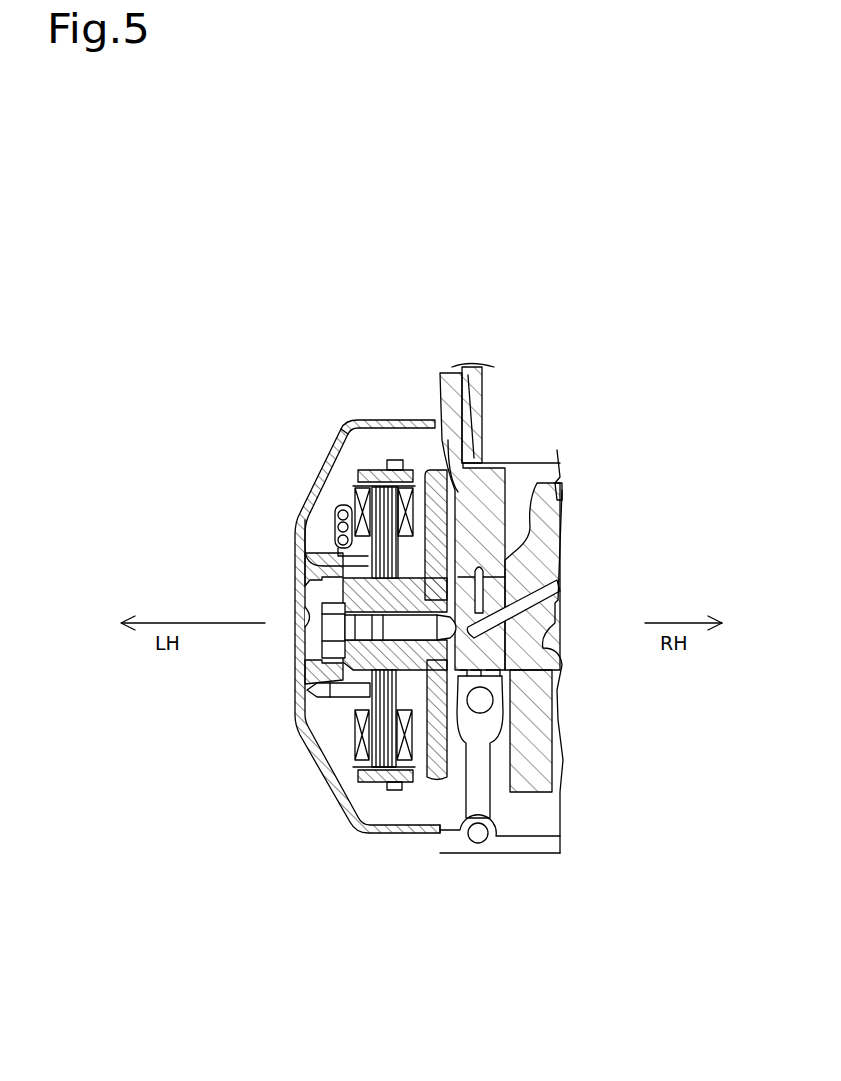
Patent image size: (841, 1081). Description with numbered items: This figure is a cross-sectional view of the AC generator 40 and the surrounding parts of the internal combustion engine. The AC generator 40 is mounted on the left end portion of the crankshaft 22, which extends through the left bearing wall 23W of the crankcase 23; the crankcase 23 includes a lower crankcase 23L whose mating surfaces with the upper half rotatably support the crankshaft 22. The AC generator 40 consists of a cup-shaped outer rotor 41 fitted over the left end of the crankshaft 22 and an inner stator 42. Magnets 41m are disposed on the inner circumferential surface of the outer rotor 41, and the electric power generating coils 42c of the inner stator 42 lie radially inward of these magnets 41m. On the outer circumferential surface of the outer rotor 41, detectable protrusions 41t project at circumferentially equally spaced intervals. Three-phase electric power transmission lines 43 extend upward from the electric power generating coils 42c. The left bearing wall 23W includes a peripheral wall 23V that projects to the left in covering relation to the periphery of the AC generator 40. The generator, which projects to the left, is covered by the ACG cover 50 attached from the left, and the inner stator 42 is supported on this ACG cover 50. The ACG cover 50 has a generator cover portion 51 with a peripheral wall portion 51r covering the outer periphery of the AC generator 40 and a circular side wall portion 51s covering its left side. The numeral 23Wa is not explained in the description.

The crankshaft 22 is at (470, 590).
The crankcase 23 is at (553, 651).
The left bearing wall 23W is at (493, 555).
The hub shaft portion 23Wa is at (414, 440).
The peripheral wall 23V is at (440, 834).
The lower crankcase 23L is at (513, 854).
The AC generator 40 is at (338, 763).
The outer rotor 41 is at (343, 421).
The detectable protrusions 41t is at (366, 470).
The magnets 41m is at (358, 477).
The inner stator 42 is at (380, 557).
The electric power generating coils 42c is at (355, 505).
The three-phase electric power transmission lines 43 is at (343, 527).
The ACG cover 50 is at (292, 628).
The generator cover portion 51 is at (333, 657).
The circular side wall portion 51s is at (292, 672).
The peripheral wall portion 51r is at (420, 834).